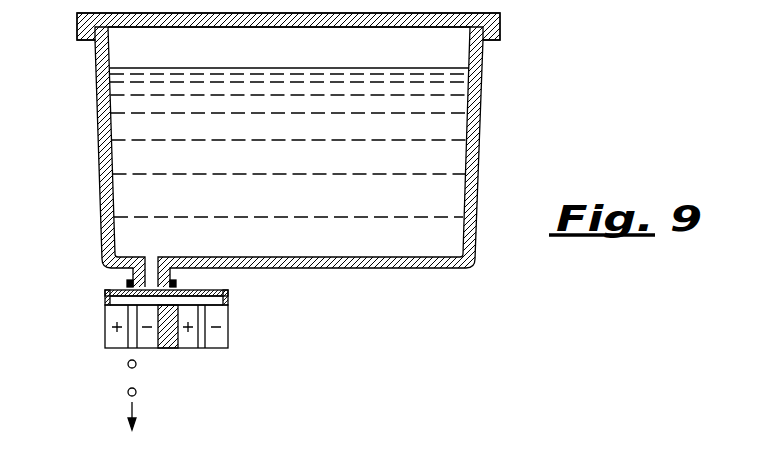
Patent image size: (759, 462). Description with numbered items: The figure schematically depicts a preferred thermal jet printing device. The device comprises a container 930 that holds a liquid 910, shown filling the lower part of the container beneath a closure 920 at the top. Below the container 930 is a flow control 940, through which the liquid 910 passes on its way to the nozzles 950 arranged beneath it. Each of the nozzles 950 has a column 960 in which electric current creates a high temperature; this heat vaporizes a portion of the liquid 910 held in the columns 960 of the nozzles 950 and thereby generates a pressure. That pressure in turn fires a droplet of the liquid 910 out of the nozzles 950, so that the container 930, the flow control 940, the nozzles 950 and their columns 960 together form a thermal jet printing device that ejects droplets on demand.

The liquid 910 is at (449, 150).
The lid 920 is at (447, 51).
The container 930 is at (97, 88).
The flow control 940 is at (188, 298).
The nozzles 950 is at (130, 355).
The columns 960 is at (130, 322).